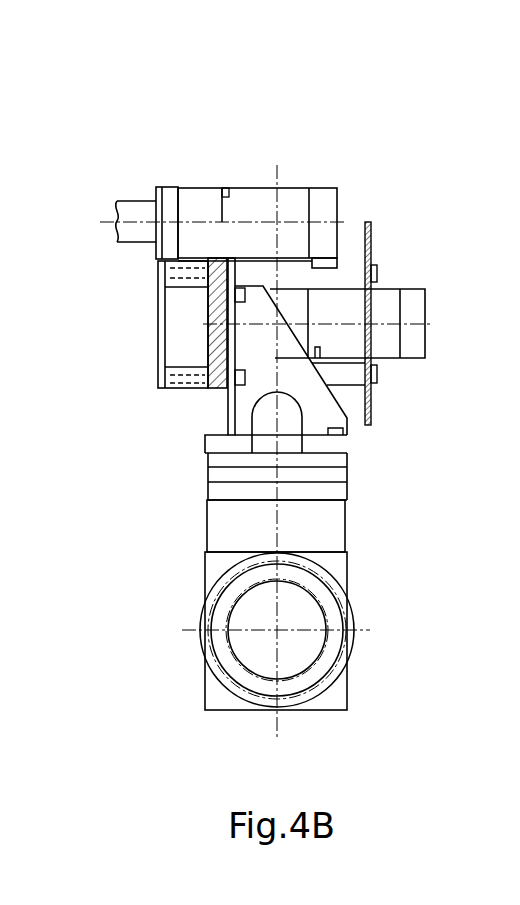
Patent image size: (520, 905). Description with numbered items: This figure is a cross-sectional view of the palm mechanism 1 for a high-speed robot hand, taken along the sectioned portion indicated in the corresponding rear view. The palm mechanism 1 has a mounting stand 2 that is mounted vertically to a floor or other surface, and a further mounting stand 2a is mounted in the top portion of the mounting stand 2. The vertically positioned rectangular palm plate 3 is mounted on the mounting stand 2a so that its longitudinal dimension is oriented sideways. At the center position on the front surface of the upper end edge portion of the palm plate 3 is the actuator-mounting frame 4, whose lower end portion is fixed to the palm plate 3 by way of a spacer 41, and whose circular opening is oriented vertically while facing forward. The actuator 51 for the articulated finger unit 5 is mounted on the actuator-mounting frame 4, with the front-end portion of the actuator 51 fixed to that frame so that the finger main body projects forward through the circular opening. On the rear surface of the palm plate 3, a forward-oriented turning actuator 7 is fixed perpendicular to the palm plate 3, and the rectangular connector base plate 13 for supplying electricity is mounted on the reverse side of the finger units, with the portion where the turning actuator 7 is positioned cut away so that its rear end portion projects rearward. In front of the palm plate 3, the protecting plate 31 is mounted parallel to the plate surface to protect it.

The palm mechanism 1 is at (412, 150).
The mounting stand 2 is at (345, 532).
The mounting stand 2a is at (228, 407).
The palm plate 3 is at (218, 388).
The actuator-mounting frame 4 is at (170, 195).
The articulated finger unit 5 is at (318, 167).
The turning actuator 7 is at (420, 310).
The connector base plate 13 is at (373, 403).
The protecting plate 31 is at (160, 326).
The spacer 41 is at (196, 262).
The actuator 51 is at (322, 205).